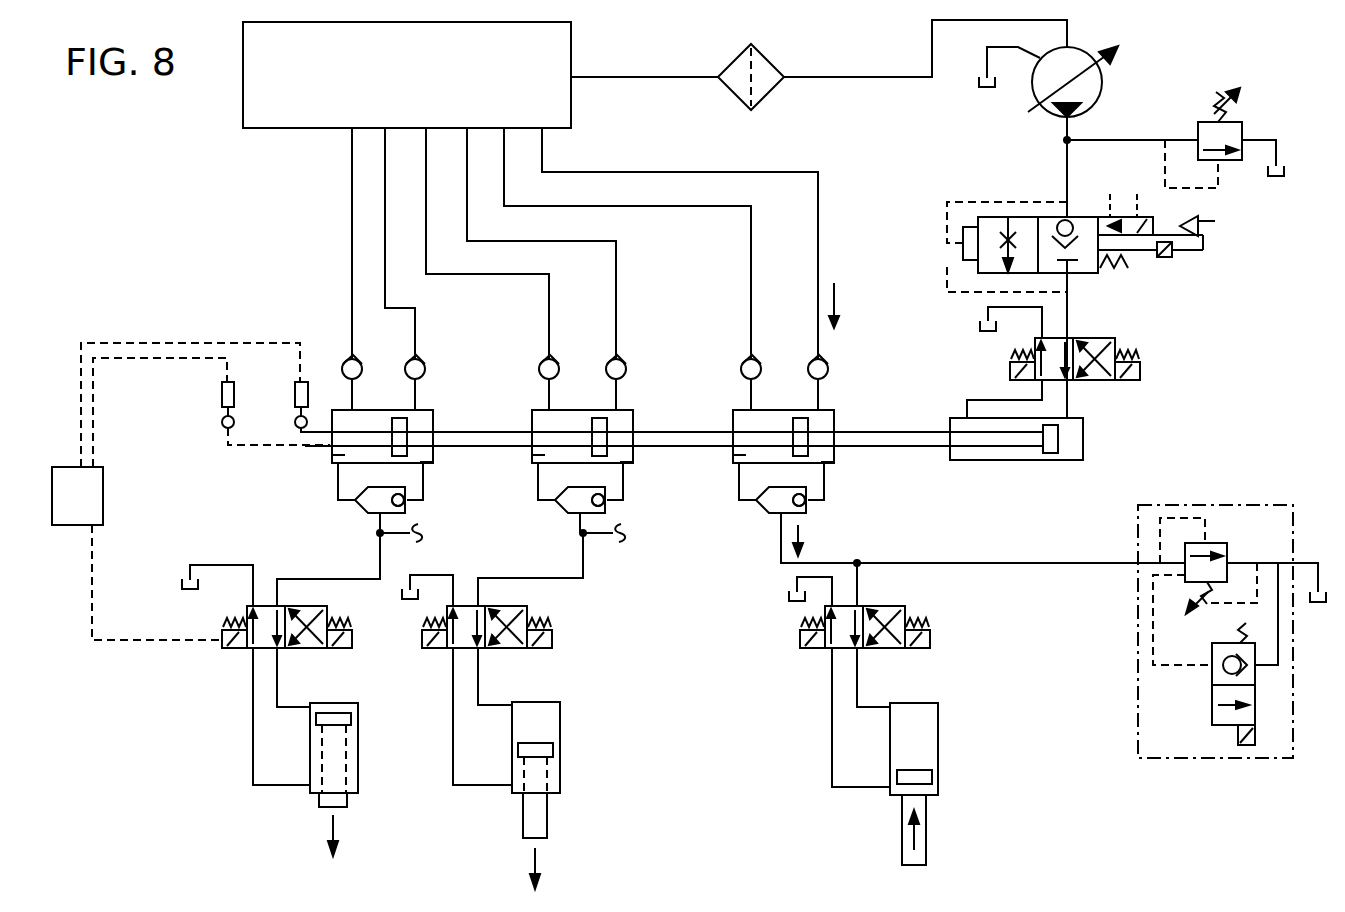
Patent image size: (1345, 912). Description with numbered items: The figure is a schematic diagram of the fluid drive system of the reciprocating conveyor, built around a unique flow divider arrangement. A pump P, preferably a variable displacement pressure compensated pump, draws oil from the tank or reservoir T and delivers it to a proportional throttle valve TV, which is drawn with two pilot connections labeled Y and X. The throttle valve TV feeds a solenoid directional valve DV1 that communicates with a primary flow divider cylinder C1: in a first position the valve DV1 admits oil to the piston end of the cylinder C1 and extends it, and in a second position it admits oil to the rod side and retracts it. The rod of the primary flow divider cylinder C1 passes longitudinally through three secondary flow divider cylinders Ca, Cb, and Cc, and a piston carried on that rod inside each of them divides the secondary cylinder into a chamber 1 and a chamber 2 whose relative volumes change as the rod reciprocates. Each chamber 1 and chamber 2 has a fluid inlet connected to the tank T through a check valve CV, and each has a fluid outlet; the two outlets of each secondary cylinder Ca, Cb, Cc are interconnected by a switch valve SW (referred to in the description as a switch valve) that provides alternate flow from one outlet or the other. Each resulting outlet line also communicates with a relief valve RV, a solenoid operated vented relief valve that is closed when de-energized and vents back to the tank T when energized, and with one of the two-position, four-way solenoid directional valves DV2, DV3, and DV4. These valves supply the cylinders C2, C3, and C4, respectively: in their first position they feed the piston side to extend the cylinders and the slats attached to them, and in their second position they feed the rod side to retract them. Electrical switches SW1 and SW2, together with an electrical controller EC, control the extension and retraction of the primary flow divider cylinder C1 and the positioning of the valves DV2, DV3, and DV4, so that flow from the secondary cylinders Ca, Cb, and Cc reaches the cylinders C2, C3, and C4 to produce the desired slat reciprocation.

The tank T is at (572, 41).
The pump P is at (1100, 88).
The proportional throttle valve TV is at (1203, 250).
The solenoid directional valve DV1 is at (1140, 370).
The primary flow divider cylinder C1 is at (1075, 438).
The check valve CV is at (359, 363).
The electrical controller EC is at (95, 497).
The electrical switch SW1 is at (222, 395).
The electrical switch SW2 is at (298, 388).
The secondary flow divider cylinder Ca is at (340, 472).
The secondary flow divider cylinder Cb is at (540, 472).
The secondary flow divider cylinder Cc is at (741, 472).
The chamber 1 is at (332, 455).
The chamber 2 is at (425, 462).
The pressure switch SW is at (362, 513).
The relief valve RV is at (1203, 468).
The solenoid directional valve DV2 is at (352, 640).
The solenoid directional valve DV3 is at (552, 640).
The solenoid directional valve DV4 is at (930, 640).
The cylinder C2 is at (358, 748).
The cylinder C3 is at (560, 750).
The cylinder C4 is at (938, 750).
The pilot port Y is at (1109, 194).
The pilot port X is at (1137, 194).